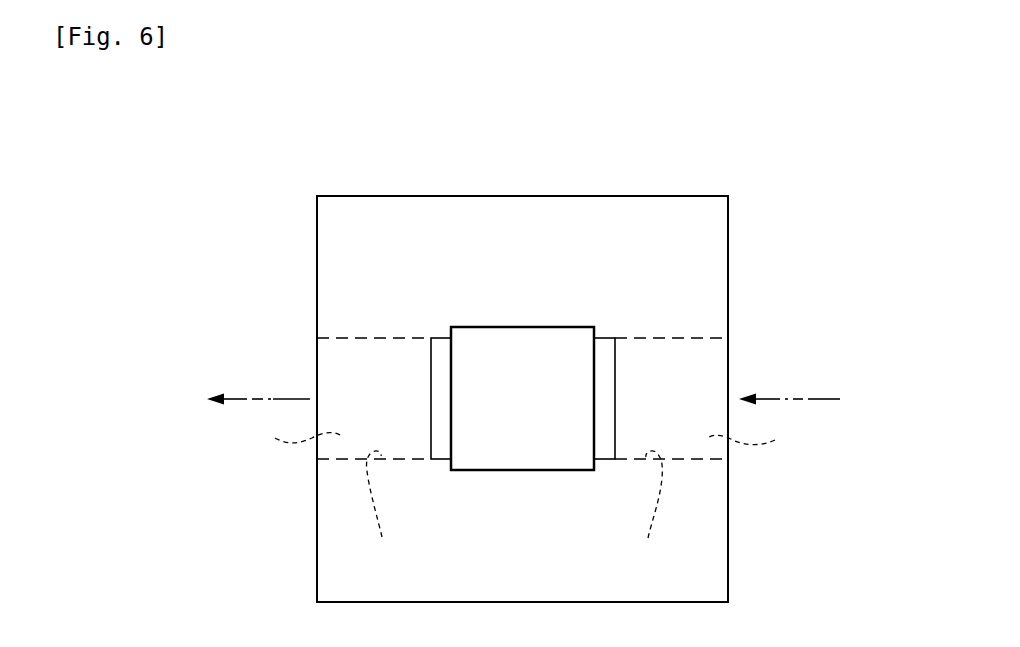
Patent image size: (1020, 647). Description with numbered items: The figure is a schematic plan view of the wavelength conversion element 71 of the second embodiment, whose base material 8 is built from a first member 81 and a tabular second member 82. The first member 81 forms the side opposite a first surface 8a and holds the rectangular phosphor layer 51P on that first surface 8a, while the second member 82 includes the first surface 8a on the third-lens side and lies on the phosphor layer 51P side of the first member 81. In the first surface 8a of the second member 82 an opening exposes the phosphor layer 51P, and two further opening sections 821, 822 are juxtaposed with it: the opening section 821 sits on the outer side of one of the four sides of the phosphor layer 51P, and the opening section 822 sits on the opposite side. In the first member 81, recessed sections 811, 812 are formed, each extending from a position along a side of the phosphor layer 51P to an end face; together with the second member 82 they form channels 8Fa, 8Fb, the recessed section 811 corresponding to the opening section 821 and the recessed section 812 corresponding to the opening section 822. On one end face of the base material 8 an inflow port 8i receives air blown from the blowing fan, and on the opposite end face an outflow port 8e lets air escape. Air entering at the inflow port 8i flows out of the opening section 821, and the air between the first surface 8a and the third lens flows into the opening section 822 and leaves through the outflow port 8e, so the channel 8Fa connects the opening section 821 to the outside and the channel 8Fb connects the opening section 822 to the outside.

The wavelength conversion element 71 is at (774, 149).
The base material 8 is at (647, 195).
The first surface 8a is at (717, 268).
The second member 82 is at (632, 399).
The opening section 821 is at (612, 356).
The opening section 822 is at (440, 356).
The phosphor layer 51P is at (520, 352).
The outflow port 8e is at (310, 358).
The inflow port 8i is at (740, 363).
The channel 8Fb is at (284, 435).
The channel 8Fa is at (765, 440).
The first member 81 is at (529, 511).
The recessed section 811 is at (645, 511).
The recessed section 812 is at (365, 511).